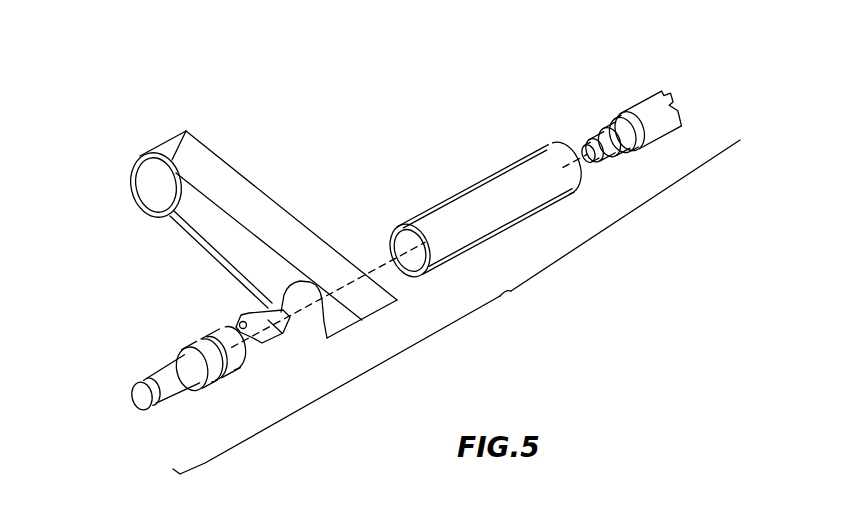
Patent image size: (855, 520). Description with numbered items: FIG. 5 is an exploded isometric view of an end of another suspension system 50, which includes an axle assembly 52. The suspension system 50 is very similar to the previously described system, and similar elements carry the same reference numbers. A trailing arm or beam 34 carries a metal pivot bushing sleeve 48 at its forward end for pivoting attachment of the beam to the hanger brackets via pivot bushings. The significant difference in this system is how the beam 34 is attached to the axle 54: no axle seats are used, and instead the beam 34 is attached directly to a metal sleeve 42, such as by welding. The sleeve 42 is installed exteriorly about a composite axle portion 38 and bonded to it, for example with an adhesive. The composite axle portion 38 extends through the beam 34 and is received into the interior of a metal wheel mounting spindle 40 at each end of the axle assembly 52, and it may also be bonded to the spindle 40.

The beam 34 is at (280, 198).
The composite axle portion 38 is at (668, 130).
The wheel mounting spindle 40 is at (153, 370).
The sleeve 42 is at (480, 183).
The pivot bushing sleeve 48 is at (212, 130).
The suspension system 50 is at (210, 198).
The axle assembly 52 is at (647, 91).
The axle 54 is at (511, 292).